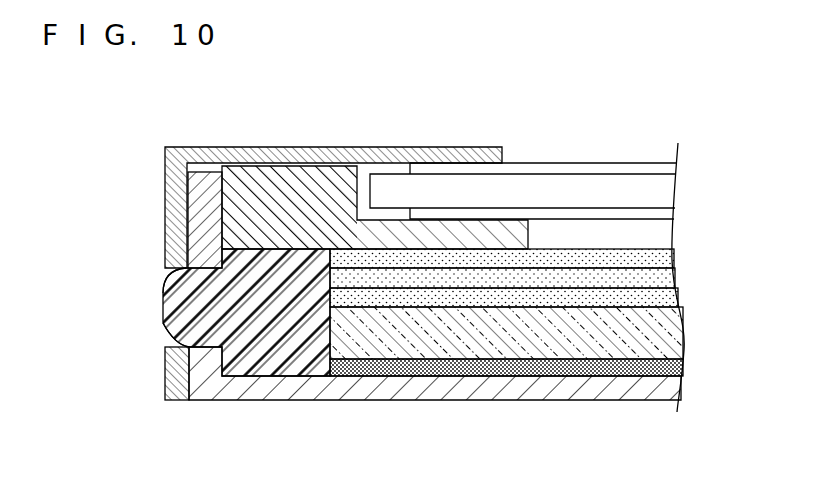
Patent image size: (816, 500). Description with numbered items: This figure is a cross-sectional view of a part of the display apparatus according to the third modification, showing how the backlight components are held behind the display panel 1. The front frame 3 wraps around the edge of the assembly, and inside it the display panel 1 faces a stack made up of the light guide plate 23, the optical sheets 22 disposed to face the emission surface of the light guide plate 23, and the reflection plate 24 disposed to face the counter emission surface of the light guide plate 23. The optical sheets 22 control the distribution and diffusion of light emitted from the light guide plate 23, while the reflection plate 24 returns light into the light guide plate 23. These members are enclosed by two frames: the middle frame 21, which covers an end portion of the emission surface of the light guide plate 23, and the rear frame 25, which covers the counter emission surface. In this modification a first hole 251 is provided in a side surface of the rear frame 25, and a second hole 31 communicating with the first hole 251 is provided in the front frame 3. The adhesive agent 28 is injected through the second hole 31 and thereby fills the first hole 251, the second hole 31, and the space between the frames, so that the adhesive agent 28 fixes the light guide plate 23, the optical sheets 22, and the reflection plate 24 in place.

The display panel 1 is at (662, 191).
The front frame 3 is at (386, 153).
The middle frame 21 is at (314, 178).
The optical sheets 22 is at (690, 247).
The light guide plate 23 is at (683, 341).
The reflection plate 24 is at (681, 367).
The rear frame 25 is at (203, 172).
The adhesive agent 28 is at (266, 367).
The second hole 31 is at (172, 273).
The first hole 251 is at (196, 340).